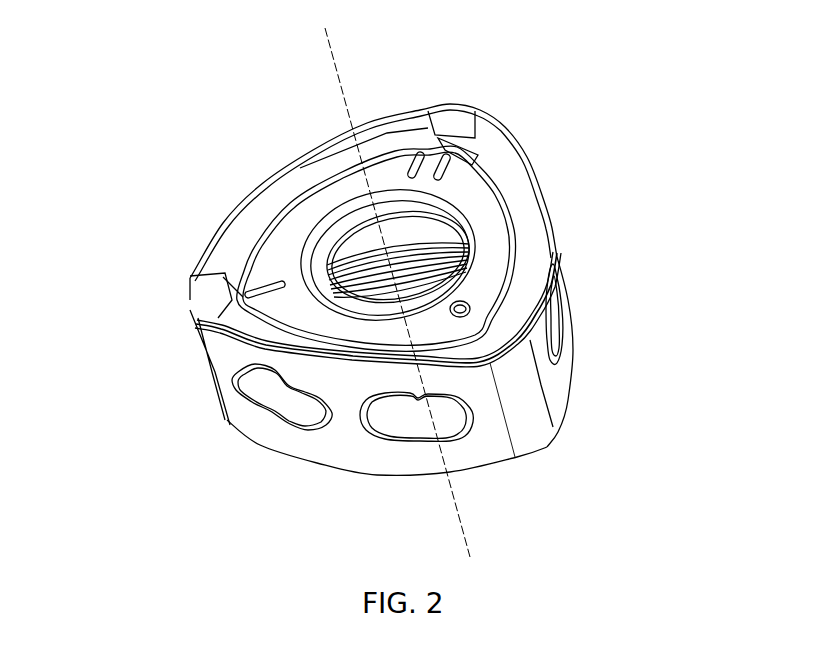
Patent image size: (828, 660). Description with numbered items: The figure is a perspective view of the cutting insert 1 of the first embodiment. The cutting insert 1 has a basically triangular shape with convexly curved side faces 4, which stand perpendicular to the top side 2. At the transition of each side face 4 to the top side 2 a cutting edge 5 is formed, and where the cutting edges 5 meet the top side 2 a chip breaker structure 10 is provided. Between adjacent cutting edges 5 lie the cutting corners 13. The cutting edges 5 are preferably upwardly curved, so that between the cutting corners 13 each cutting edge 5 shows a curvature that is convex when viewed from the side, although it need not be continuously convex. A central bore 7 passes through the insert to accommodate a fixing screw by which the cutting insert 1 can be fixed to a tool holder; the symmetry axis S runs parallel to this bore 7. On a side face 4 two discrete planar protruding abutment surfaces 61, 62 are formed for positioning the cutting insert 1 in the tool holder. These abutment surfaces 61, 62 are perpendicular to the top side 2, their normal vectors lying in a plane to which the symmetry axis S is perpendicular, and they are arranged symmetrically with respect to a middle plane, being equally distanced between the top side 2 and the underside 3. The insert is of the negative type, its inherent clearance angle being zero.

The cutting insert 1 is at (574, 68).
The top side 2 is at (475, 200).
The underside 3 is at (534, 482).
The side face 4 is at (415, 375).
The cutting edge 5 is at (262, 187).
The central bore 7 is at (358, 155).
The chip breaker structure 10 is at (517, 213).
The cutting corner 13 is at (458, 104).
The abutment surface 61 is at (410, 420).
The abutment surface 62 is at (275, 393).
The symmetry axis S is at (396, 280).